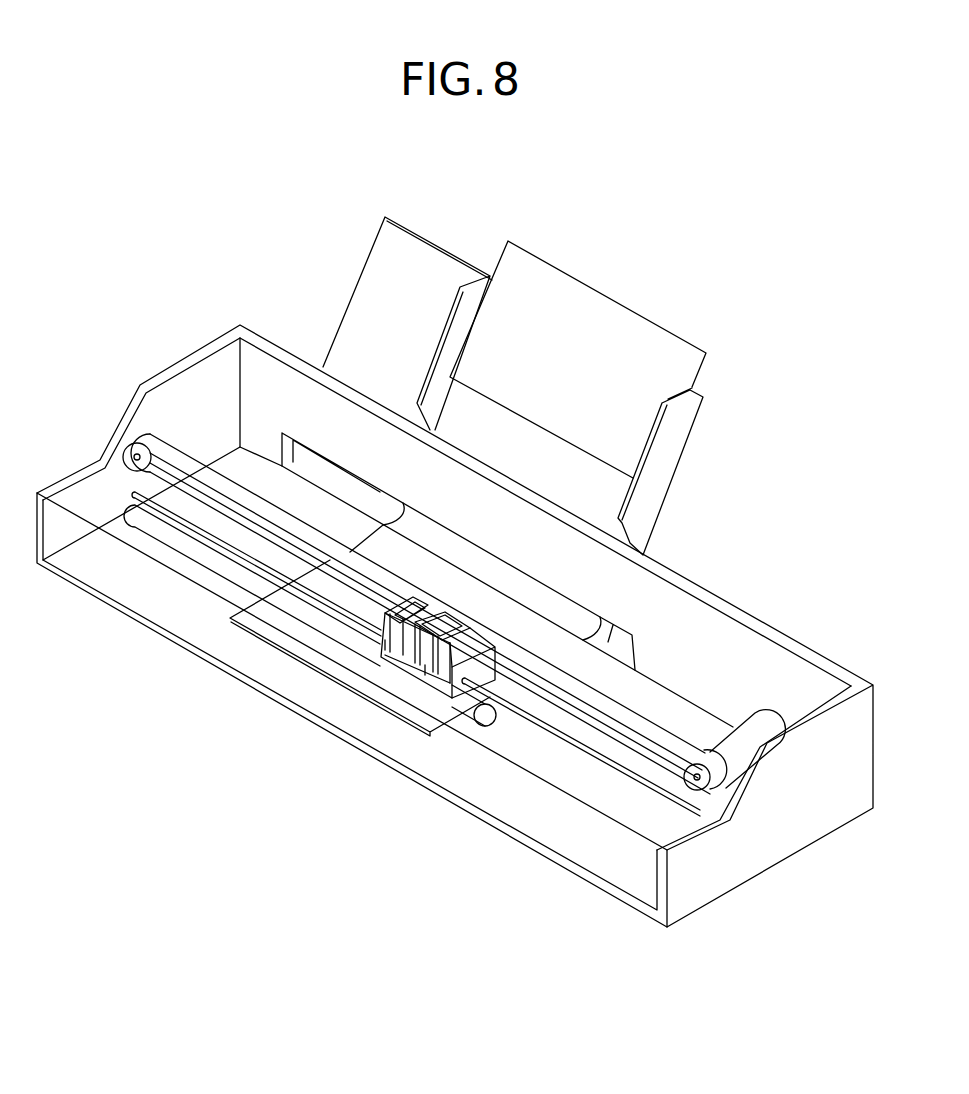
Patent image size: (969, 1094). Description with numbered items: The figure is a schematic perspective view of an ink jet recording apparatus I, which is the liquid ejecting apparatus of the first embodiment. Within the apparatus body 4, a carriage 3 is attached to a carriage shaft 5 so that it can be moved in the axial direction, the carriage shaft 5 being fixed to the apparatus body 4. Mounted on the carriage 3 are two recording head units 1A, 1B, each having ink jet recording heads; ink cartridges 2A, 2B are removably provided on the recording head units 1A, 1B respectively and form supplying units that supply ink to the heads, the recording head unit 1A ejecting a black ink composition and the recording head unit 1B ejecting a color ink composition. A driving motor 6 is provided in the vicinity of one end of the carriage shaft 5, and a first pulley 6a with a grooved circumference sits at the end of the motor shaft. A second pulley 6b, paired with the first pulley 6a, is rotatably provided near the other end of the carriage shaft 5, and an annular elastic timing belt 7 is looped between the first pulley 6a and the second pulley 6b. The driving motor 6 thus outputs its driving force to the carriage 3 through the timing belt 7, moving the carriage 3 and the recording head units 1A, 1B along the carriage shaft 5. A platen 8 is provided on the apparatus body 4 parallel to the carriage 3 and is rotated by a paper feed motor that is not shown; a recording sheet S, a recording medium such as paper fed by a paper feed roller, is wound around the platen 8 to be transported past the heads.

The ink jet recording apparatus I is at (720, 217).
The recording sheet S is at (517, 447).
The recording head unit 1A is at (385, 668).
The recording head unit 1B is at (425, 690).
The ink cartridge 2A is at (415, 606).
The ink cartridge 2B is at (447, 623).
The carriage 3 is at (490, 668).
The apparatus body 4 is at (697, 594).
The carriage shaft 5 is at (131, 518).
The driving motor 6 is at (748, 738).
The first pulley 6a is at (695, 790).
The second pulley 6b is at (129, 453).
The timing belt 7 is at (175, 457).
The platen 8 is at (212, 563).